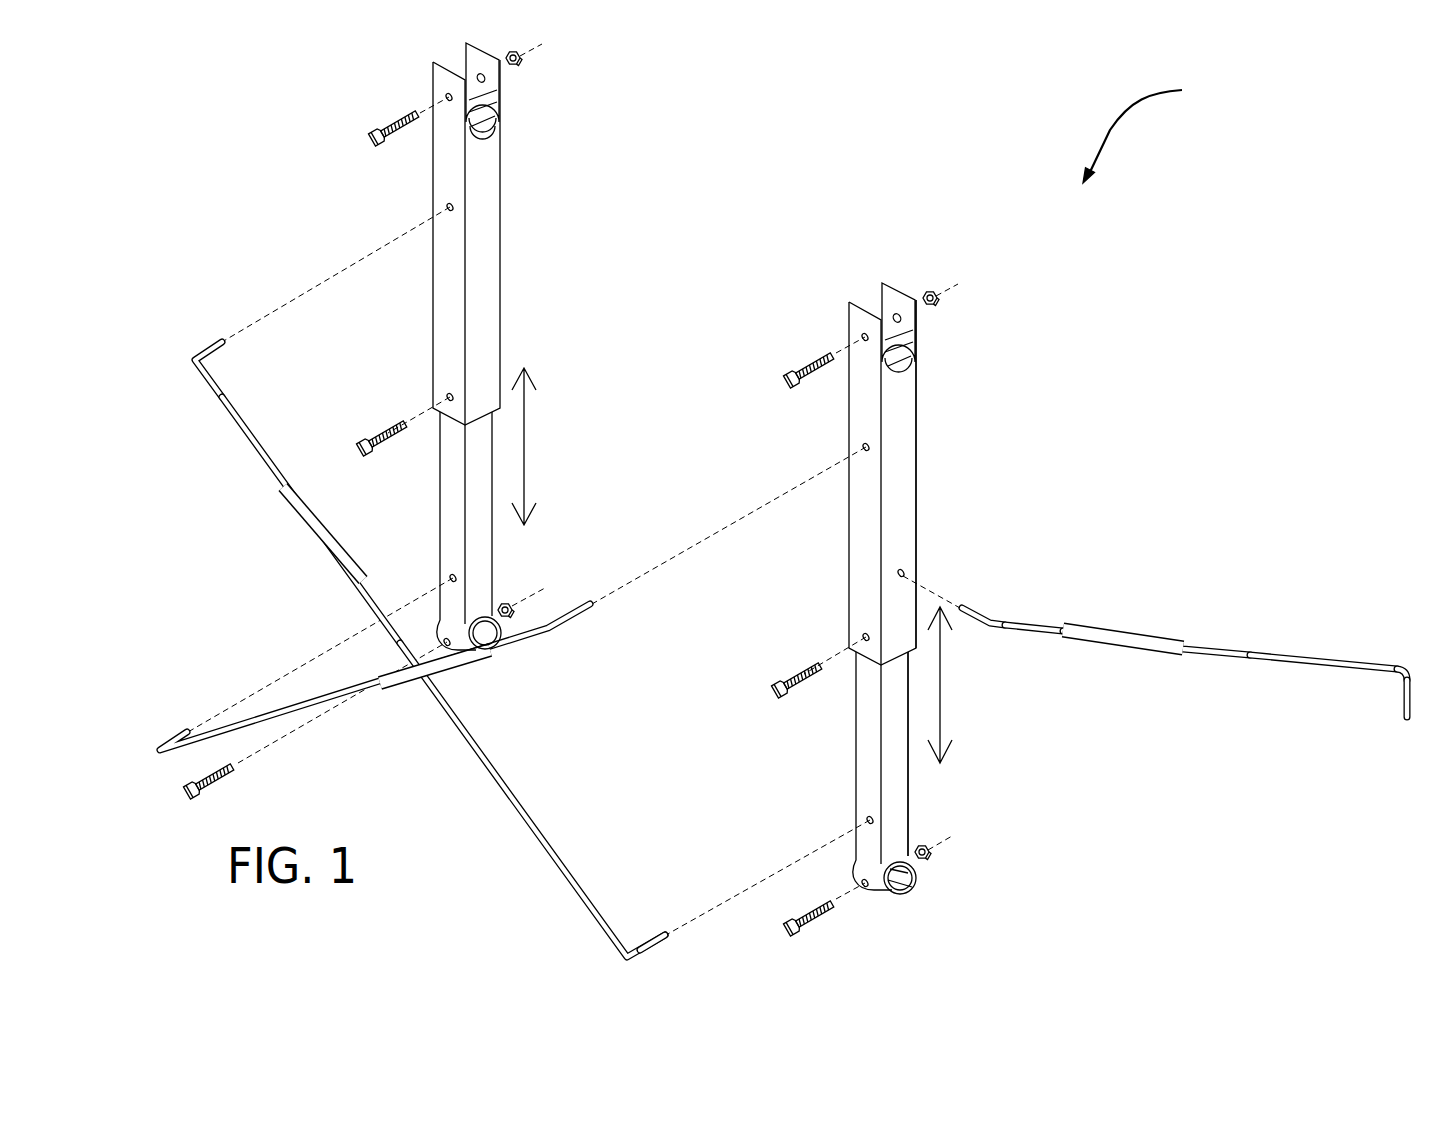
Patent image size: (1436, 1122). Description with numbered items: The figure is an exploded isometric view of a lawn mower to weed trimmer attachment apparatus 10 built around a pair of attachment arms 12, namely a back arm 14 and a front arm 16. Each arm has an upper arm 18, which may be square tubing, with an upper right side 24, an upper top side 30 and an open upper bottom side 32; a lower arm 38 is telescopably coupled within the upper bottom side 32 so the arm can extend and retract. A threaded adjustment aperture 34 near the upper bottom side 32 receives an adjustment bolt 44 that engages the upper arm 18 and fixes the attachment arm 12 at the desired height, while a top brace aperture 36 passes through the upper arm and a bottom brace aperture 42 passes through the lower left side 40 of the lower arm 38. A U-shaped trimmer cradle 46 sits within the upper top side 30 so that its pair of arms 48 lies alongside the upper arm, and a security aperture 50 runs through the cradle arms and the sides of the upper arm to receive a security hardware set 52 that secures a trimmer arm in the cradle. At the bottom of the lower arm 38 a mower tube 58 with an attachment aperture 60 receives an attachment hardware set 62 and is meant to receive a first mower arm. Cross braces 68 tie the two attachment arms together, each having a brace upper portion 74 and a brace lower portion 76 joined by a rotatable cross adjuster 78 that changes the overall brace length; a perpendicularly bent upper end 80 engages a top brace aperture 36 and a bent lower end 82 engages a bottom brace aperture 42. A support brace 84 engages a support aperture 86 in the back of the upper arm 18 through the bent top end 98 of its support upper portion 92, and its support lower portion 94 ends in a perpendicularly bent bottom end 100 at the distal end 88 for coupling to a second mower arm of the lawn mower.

The lawn mower to weed trimmer attachment apparatus 10 is at (1153, 125).
The attachment arms 12 is at (847, 325).
The back arm 14 is at (918, 470).
The front arm 16 is at (501, 340).
The upper arm 18 is at (905, 520).
The upper right side 24 is at (500, 203).
The upper top side 30 is at (482, 140).
The upper bottom side 32 is at (493, 412).
The threaded adjustment aperture 34 is at (867, 638).
The top brace aperture 36 is at (860, 448).
The lower arm 38 is at (905, 797).
The lower left side 40 is at (863, 752).
The bottom brace aperture 42 is at (865, 820).
The adjustment bolt 44 is at (788, 682).
The trimmer cradle 46 is at (487, 113).
The pair of arms 48 is at (917, 365).
The security aperture 50 is at (447, 96).
The security hardware set 52 is at (933, 292).
The mower tube 58 is at (905, 890).
The attachment aperture 60 is at (870, 890).
The attachment hardware set 62 is at (795, 917).
The cross braces 68 is at (363, 690).
The brace upper portion 74 is at (220, 402).
The brace lower portion 76 is at (527, 815).
The cross adjuster 78 is at (312, 533).
The upper end 80 is at (213, 347).
The lower end 82 is at (658, 938).
The support brace 84 is at (1215, 647).
The support aperture 86 is at (905, 573).
The distal end 88 is at (1407, 717).
The support upper portion 92 is at (1020, 625).
The support lower portion 94 is at (1278, 662).
The top end 98 is at (975, 617).
The bottom end 100 is at (1401, 689).